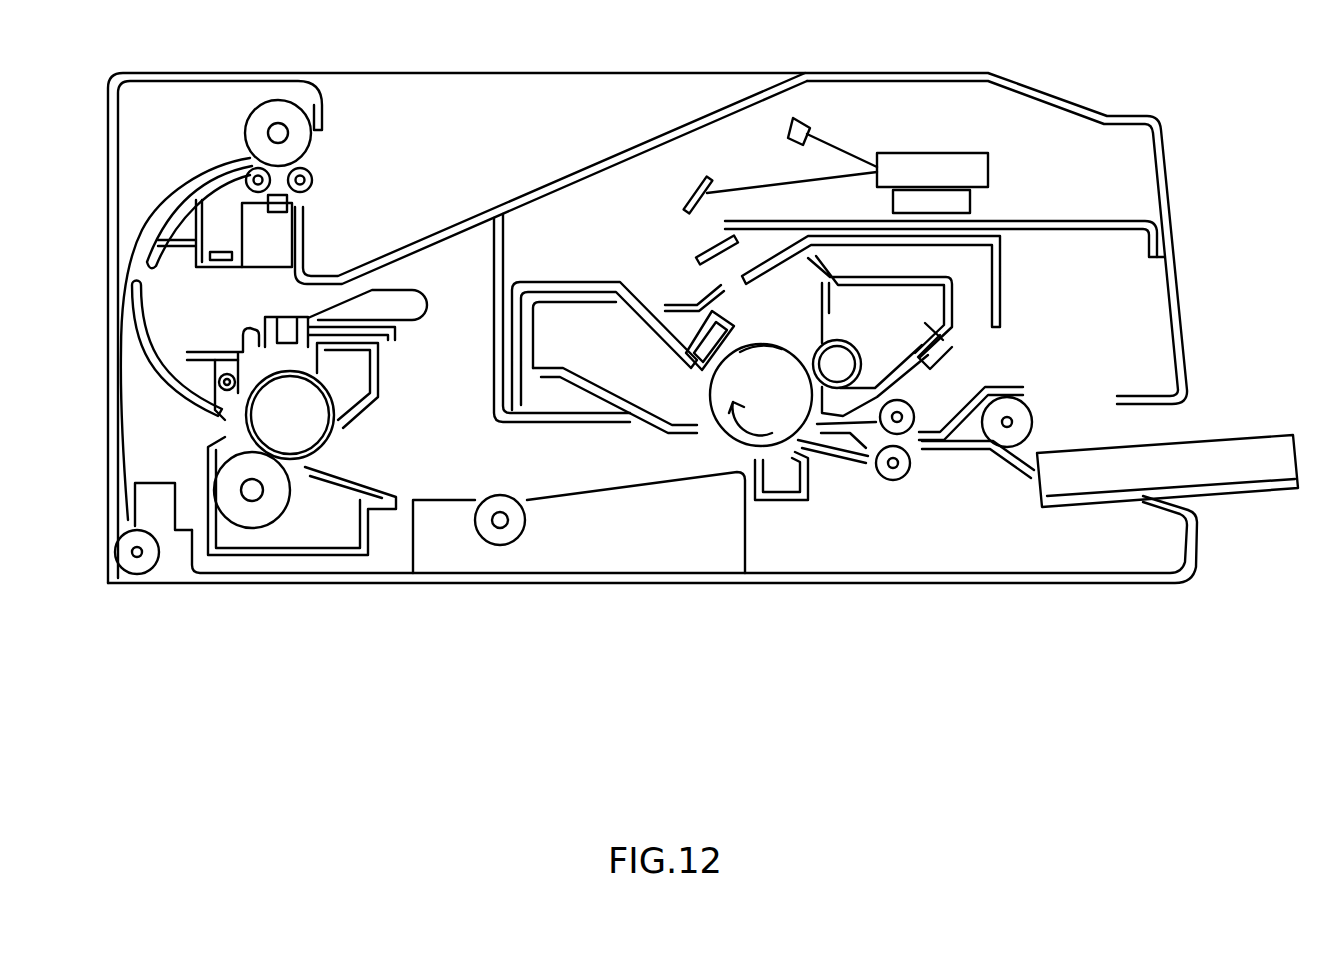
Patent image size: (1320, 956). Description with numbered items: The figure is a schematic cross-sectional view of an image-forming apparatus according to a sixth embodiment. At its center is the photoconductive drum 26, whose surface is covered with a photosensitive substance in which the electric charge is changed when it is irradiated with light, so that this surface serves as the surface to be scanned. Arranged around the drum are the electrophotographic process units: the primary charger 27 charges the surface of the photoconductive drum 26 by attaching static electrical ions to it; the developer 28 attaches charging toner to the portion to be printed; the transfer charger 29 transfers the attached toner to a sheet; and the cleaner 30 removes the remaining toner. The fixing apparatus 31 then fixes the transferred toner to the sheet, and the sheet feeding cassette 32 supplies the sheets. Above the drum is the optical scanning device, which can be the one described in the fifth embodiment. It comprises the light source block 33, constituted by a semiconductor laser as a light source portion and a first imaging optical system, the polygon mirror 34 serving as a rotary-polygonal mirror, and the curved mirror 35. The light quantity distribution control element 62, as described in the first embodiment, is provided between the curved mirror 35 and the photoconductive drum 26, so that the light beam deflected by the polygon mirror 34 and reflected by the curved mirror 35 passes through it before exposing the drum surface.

The photoconductive drum 26 is at (731, 440).
The primary charger 27 is at (666, 320).
The developer 28 is at (930, 353).
The transfer charger 29 is at (797, 500).
The cleaner 30 is at (650, 400).
The fixing apparatus 31 is at (295, 433).
The sheet feeding cassette 32 is at (1247, 450).
The light source block 33 is at (802, 118).
The polygon mirror 34 is at (947, 165).
The curved mirror 35 is at (745, 345).
The light quantity distribution control element 62 is at (697, 257).